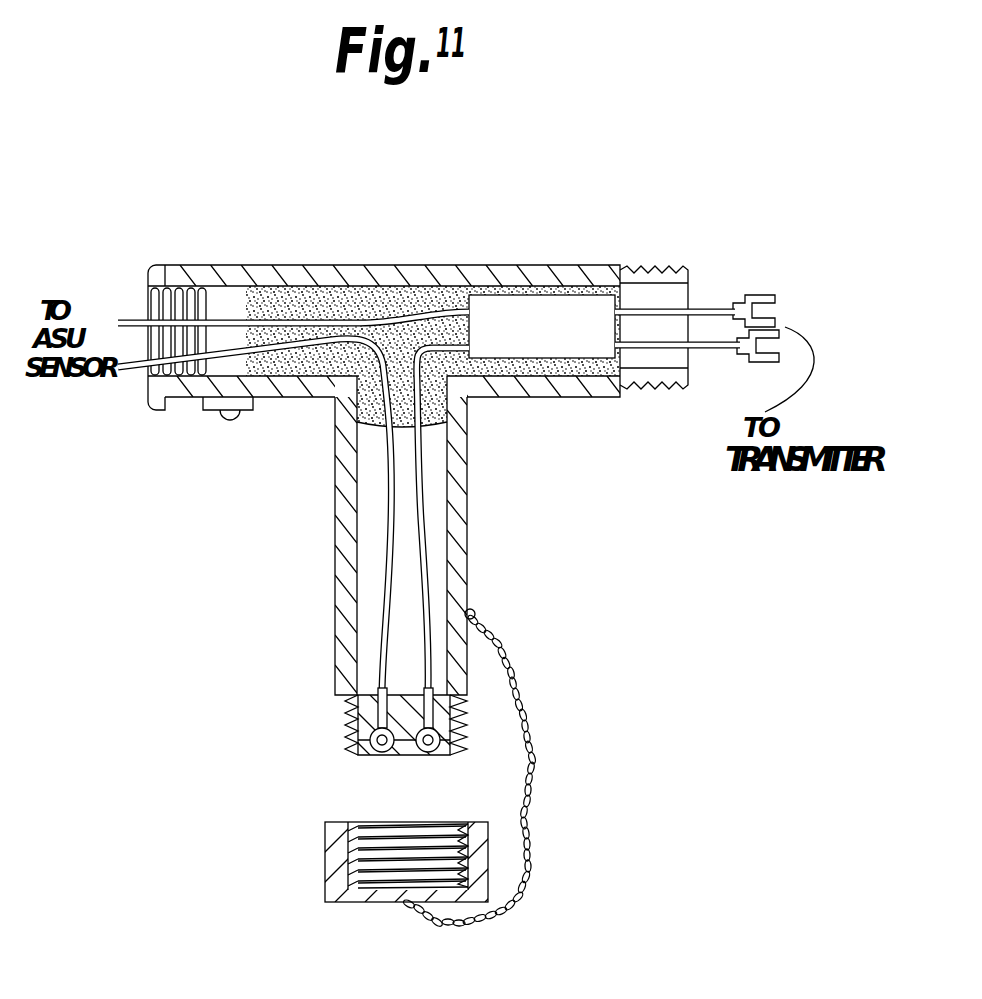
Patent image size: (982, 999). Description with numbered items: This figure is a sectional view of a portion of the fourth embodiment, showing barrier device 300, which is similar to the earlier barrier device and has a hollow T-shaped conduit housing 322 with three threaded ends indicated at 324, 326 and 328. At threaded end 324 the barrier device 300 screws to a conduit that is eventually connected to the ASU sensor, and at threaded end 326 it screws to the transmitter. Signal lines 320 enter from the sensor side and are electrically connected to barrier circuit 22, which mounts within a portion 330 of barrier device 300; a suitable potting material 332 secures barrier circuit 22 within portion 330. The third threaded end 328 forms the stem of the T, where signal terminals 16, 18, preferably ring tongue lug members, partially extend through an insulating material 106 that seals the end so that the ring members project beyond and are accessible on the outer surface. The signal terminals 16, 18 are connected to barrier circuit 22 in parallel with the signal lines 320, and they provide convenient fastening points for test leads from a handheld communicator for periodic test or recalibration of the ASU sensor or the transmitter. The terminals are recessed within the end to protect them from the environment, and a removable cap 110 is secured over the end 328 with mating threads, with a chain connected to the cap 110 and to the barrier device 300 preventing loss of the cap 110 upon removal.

The barrier device 300 is at (456, 198).
The signal lines 320 is at (112, 300).
The threaded end 324 is at (138, 292).
The T-shaped conduit housing 322 is at (498, 265).
The potting material 332 is at (313, 300).
The barrier circuit 22 is at (538, 293).
The threaded end 326 is at (705, 289).
The portion 330 is at (538, 423).
The threaded end 328 is at (332, 777).
The insulating material 106 is at (373, 718).
The signal terminal 16 is at (397, 755).
The signal terminal 18 is at (437, 755).
The removable cap 110 is at (325, 890).